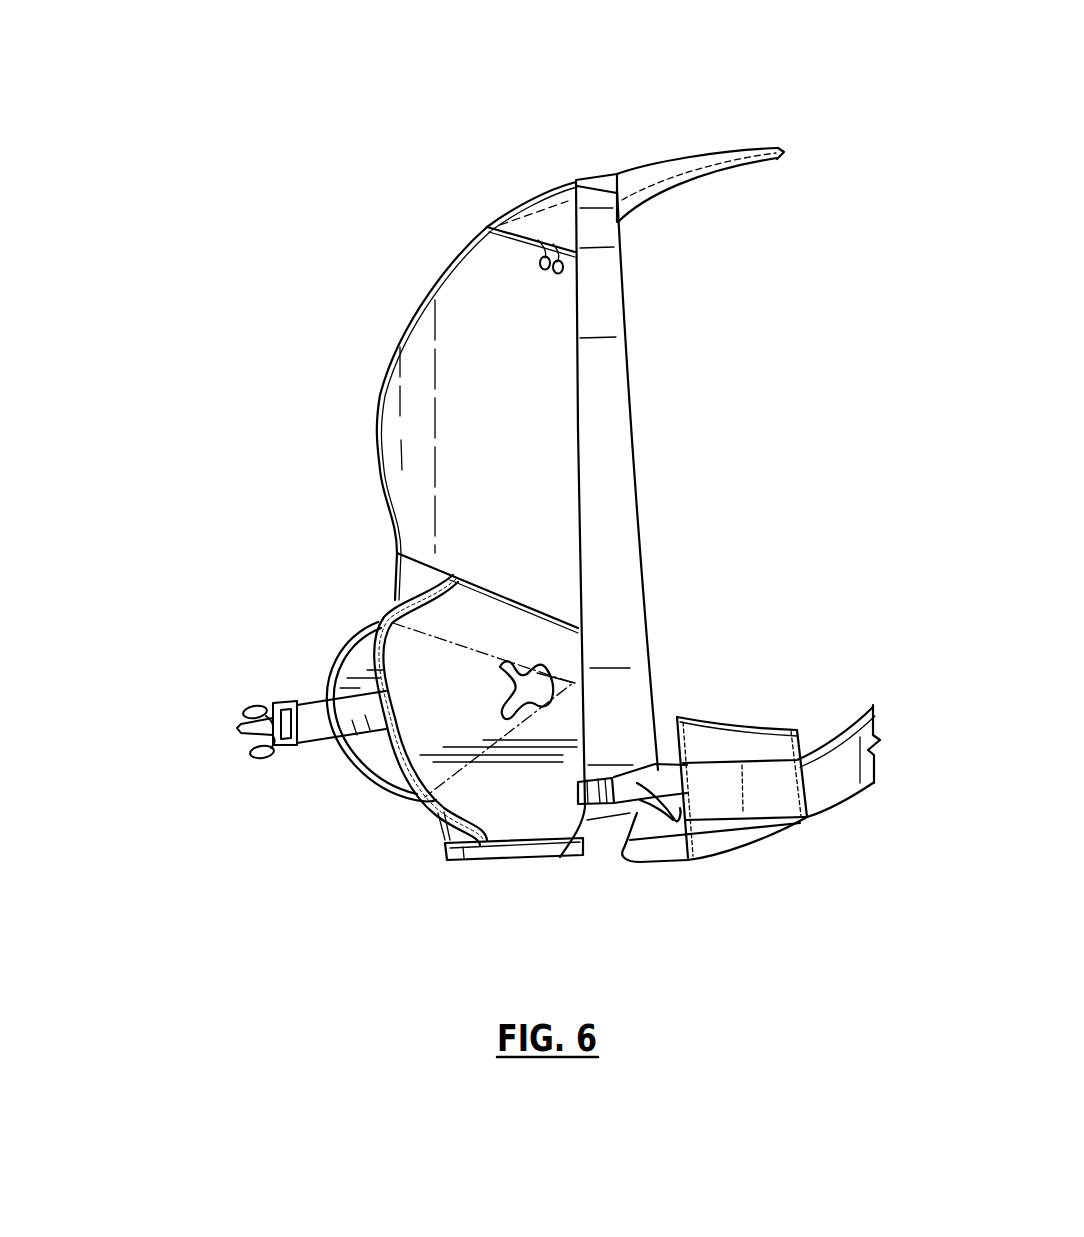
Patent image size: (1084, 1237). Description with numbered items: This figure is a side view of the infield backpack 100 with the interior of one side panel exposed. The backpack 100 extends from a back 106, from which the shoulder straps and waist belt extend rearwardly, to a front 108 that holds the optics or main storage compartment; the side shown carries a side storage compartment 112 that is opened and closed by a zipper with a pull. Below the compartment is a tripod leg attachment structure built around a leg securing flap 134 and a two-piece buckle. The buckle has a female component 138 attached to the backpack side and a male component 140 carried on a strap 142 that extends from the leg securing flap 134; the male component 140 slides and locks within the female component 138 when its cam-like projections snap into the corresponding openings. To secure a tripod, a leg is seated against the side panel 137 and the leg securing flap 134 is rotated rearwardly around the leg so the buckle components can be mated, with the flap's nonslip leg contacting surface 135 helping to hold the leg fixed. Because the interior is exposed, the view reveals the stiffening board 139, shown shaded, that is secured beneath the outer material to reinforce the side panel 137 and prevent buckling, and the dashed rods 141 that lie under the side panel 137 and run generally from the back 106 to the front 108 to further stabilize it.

The infield backpack 100 is at (500, 477).
The back 106 is at (648, 404).
The front 108 is at (370, 370).
The side storage compartment 112 is at (521, 397).
The leg securing flap 134 is at (345, 652).
The leg contacting surface 135 is at (372, 747).
The side panel 137 is at (527, 793).
The female component 138 is at (540, 680).
The stiffening board 139 is at (460, 794).
The male component 140 is at (247, 708).
The rod 141 is at (543, 720).
The strap 142 is at (318, 704).